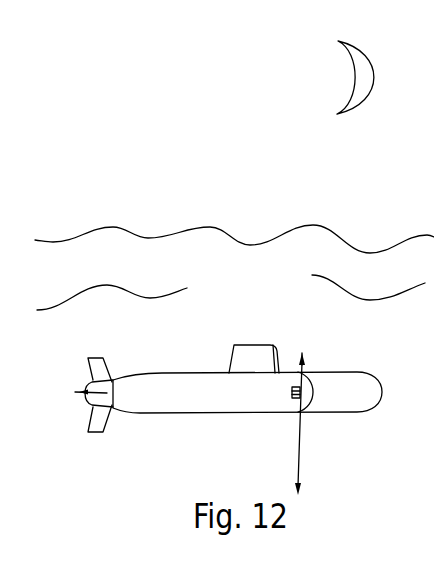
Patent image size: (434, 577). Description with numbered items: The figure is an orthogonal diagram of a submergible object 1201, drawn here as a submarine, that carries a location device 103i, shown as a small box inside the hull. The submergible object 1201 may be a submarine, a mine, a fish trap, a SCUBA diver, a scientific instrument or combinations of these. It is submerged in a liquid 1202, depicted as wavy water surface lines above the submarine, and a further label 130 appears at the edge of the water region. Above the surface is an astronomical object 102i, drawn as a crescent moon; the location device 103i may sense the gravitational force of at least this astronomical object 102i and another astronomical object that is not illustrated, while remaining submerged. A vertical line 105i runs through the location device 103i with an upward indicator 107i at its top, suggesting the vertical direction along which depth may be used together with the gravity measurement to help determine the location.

The astronomical object 102i is at (322, 75).
The liquid 1202 is at (147, 237).
The water surface region 130 is at (421, 210).
The submergible object 1201 is at (214, 403).
The location device 103i is at (291, 394).
The vertical axis arrow 105i is at (299, 447).
The upward direction indicator 107i is at (302, 367).